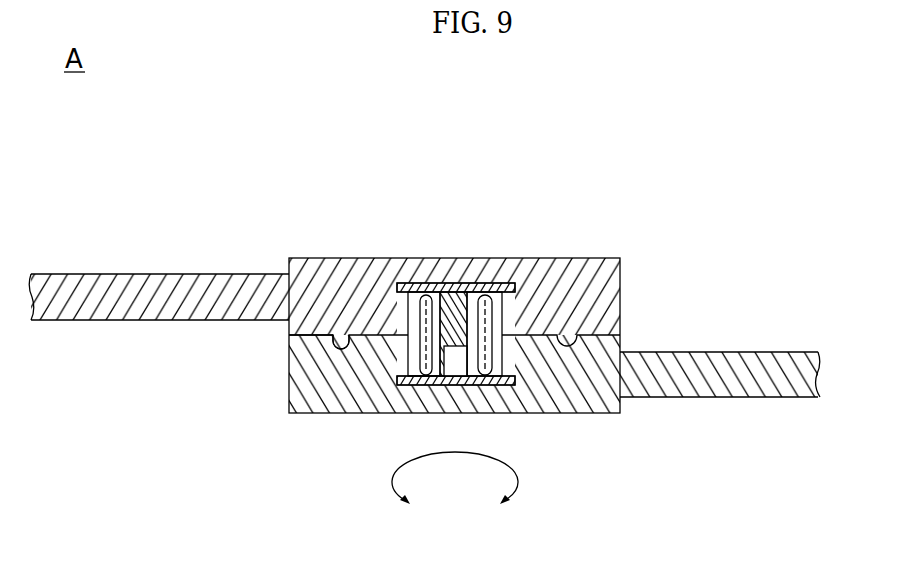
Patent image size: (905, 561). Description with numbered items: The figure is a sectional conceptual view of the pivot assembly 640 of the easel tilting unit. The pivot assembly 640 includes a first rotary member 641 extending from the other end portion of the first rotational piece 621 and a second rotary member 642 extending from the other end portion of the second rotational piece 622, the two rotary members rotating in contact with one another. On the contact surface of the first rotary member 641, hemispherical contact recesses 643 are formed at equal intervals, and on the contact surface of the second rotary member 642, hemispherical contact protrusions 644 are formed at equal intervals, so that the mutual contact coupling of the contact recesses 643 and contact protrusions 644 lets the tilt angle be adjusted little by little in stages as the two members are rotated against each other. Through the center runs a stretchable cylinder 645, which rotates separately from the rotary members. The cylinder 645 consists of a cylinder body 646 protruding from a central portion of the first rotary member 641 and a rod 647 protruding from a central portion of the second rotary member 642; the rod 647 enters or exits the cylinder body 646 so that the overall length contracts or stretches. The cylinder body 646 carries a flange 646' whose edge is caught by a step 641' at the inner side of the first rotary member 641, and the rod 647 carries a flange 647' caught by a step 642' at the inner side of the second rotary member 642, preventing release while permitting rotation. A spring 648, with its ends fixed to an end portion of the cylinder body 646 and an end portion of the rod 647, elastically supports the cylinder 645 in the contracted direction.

The pivot assembly 640 is at (466, 240).
The first rotary member 641 is at (477, 417).
The step 641' is at (517, 380).
The second rotary member 642 is at (454, 233).
The step 642' is at (406, 287).
The contact recesses 643 is at (348, 343).
The contact protrusions 644 is at (345, 342).
The cylinder 645 is at (703, 253).
The cylinder body 646 is at (548, 327).
The flange 646' is at (435, 422).
The rod 647 is at (559, 308).
The flange 647' is at (547, 277).
The spring 648 is at (430, 376).
The first rotational piece 621 is at (789, 392).
The second rotational piece 622 is at (134, 288).